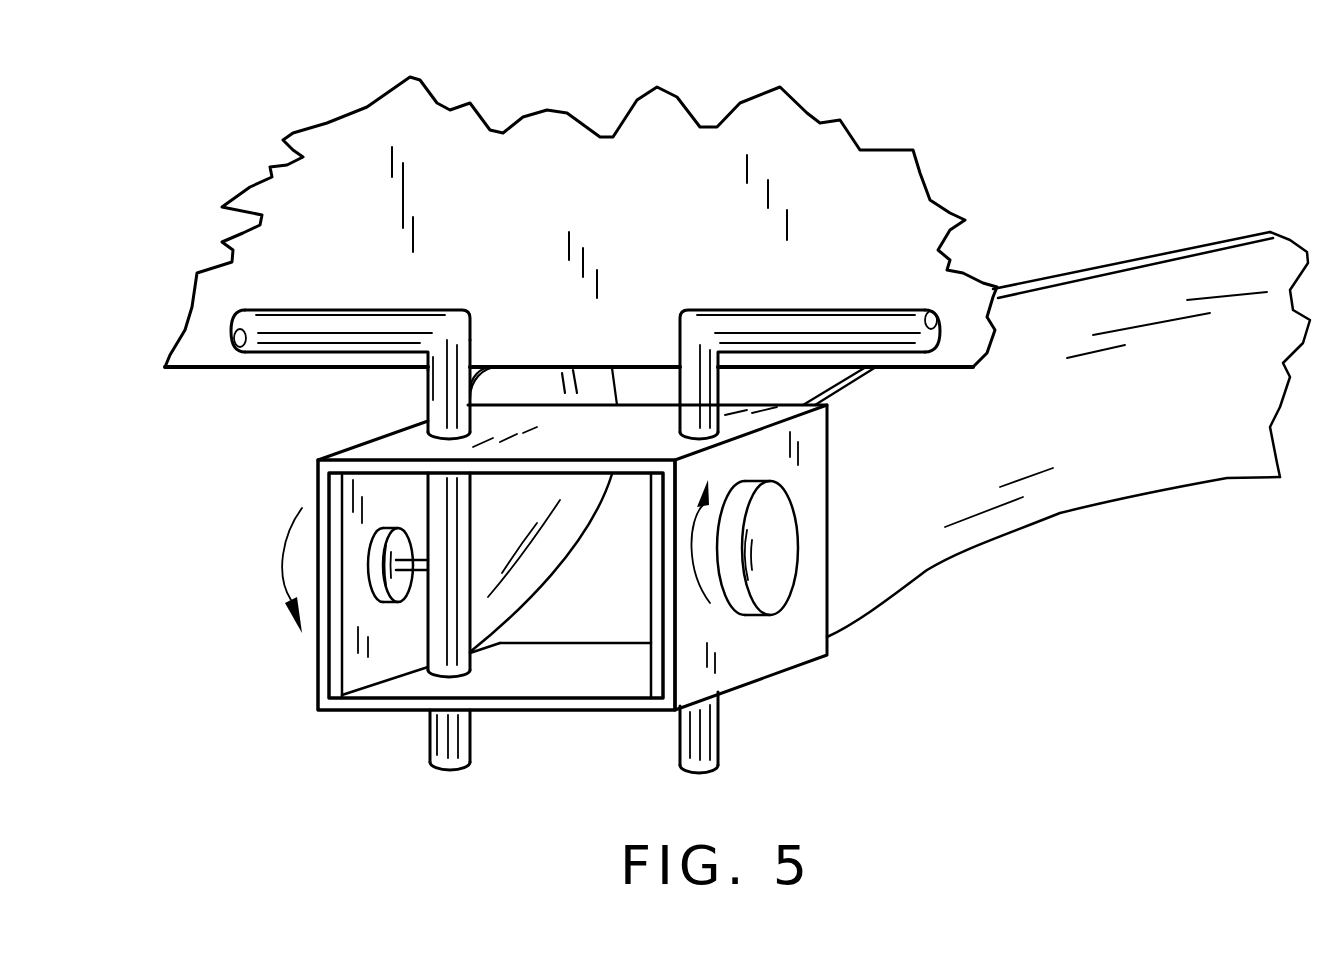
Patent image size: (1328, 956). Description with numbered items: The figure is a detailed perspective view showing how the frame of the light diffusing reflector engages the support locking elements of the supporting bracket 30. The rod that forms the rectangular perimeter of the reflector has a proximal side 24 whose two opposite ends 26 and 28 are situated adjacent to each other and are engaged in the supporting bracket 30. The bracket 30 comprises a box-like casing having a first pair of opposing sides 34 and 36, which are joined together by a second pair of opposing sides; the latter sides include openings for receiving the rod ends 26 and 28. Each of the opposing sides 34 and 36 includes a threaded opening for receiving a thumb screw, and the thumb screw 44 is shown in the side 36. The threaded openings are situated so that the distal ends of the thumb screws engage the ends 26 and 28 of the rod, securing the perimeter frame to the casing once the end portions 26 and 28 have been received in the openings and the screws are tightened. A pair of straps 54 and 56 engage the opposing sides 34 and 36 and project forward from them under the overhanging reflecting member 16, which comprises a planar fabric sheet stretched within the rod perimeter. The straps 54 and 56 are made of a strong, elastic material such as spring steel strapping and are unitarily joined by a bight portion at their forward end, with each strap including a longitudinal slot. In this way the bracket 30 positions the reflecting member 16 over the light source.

The reflecting member 16 is at (667, 152).
The proximal side 24 is at (362, 327).
The end of rod 26 is at (692, 767).
The end of rod 28 is at (460, 762).
The supporting bracket 30 is at (200, 623).
The opposing side 34 is at (323, 638).
The opposing side 36 is at (770, 643).
The thumb screw 44 is at (777, 567).
The strap 54 is at (357, 673).
The strap 56 is at (1087, 467).